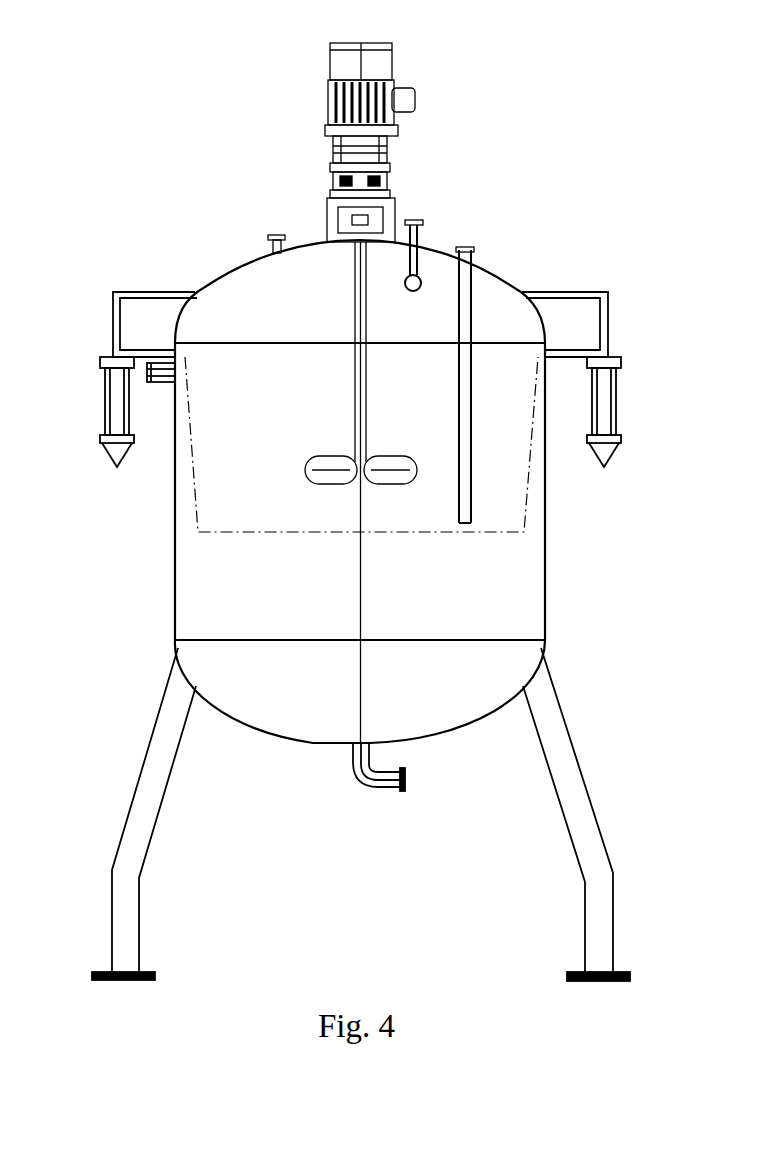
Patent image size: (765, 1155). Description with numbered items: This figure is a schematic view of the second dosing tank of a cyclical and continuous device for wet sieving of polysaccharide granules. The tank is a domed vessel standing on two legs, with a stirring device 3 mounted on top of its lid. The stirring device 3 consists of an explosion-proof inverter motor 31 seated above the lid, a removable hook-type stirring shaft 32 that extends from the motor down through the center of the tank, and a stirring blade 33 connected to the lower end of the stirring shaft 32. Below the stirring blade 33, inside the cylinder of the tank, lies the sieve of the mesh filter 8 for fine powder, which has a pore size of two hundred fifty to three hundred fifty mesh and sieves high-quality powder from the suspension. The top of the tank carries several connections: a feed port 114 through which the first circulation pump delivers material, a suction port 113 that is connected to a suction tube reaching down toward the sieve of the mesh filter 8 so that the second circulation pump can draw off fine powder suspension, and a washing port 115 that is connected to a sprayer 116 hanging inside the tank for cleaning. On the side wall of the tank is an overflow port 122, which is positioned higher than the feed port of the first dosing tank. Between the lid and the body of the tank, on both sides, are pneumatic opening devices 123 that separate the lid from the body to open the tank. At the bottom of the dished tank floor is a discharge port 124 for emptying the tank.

The stirring device 3 is at (112, 53).
The explosion-proof inverter motor 31 is at (335, 127).
The stirring shaft 32 is at (355, 335).
The stirring blade 33 is at (308, 456).
The mesh filter for fine powder 8 is at (545, 525).
The suction port 113 is at (461, 250).
The feed port 114 is at (278, 235).
The washing port 115 is at (413, 220).
The sprayer 116 is at (422, 282).
The overflow port 122 is at (147, 382).
The pneumatic opening device 123 is at (112, 296).
The discharge port 124 is at (357, 760).